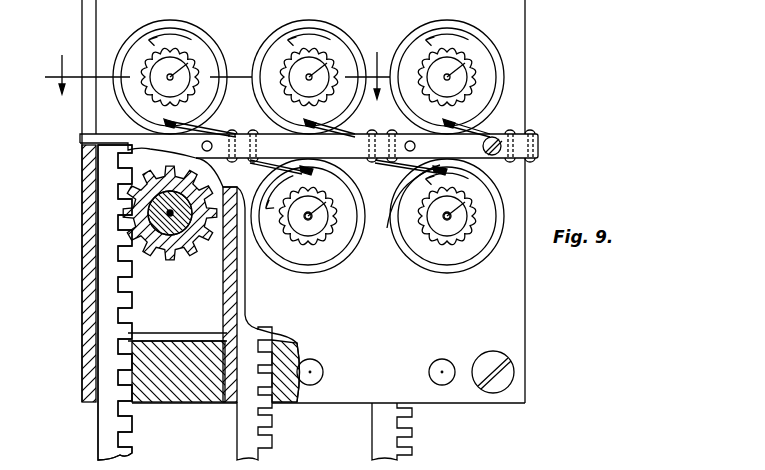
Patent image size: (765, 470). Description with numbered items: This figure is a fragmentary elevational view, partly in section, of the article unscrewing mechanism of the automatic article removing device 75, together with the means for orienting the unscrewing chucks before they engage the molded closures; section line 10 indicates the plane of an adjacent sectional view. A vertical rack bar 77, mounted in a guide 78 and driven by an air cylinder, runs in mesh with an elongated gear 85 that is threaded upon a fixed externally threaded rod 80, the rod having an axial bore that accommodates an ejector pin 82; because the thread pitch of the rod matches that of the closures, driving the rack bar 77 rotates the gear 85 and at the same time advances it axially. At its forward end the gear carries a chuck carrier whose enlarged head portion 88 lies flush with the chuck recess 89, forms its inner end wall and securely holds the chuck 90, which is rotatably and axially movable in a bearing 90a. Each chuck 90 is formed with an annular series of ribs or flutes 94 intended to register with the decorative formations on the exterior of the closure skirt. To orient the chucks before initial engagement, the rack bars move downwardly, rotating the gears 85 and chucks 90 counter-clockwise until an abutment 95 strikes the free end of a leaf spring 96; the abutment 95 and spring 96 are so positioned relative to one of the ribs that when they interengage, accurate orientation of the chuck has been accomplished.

The section line 10 is at (217, 64).
The article removing device 75 is at (568, 98).
The vertical rack bar 77 is at (105, 418).
The guide 78 is at (230, 398).
The externally threaded rod 80 is at (175, 235).
The ejector pin 82 is at (152, 209).
The elongated gear 85 is at (205, 252).
The enlarged head portion 88 is at (450, 228).
The chuck recess 89 is at (480, 212).
The chuck 90 is at (482, 75).
The bearing 90a is at (413, 253).
The ribs or flutes 94 is at (470, 67).
The abutment 95 is at (445, 123).
The leaf spring 96 is at (490, 133).